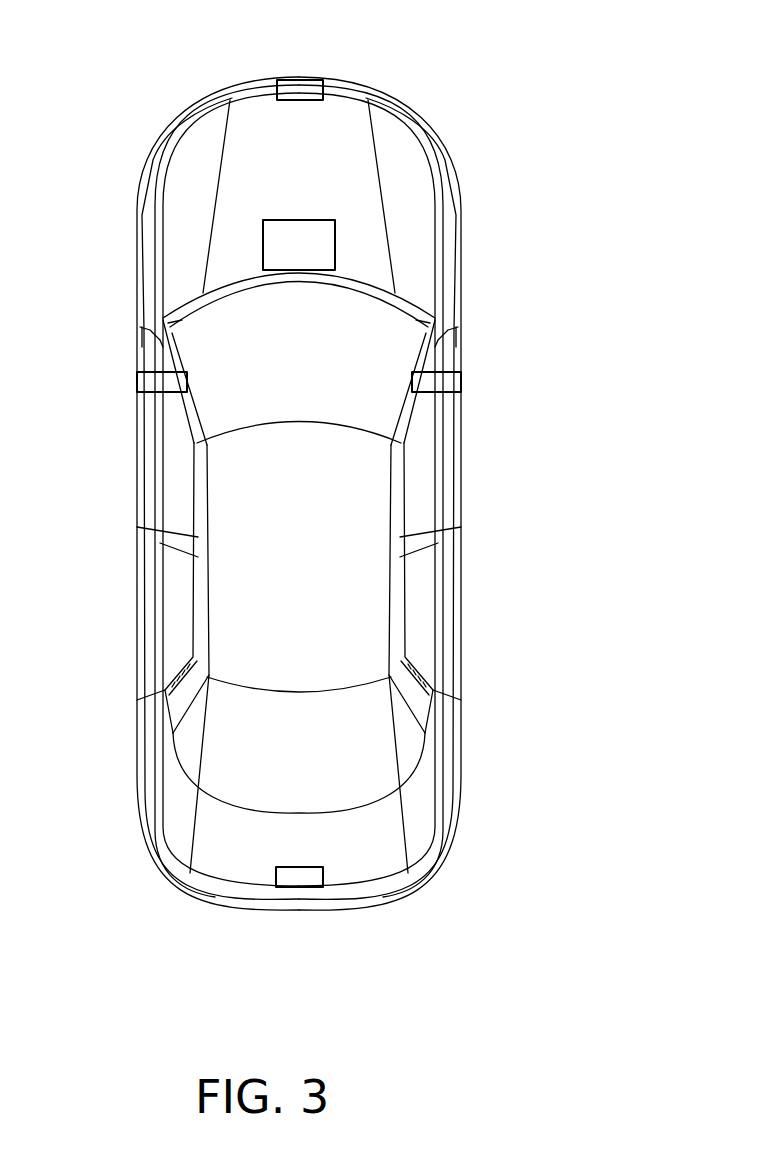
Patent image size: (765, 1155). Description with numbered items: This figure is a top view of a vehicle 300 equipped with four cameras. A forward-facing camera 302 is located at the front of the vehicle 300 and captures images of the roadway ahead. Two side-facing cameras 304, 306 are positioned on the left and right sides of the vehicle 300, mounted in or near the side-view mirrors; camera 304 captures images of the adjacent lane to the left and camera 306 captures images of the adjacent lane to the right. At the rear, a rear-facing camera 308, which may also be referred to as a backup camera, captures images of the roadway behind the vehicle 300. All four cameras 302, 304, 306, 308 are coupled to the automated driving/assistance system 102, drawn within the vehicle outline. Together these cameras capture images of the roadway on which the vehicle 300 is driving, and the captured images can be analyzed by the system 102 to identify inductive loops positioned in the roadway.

The vehicle 300 is at (355, 482).
The automated driving/assistance system 102 is at (299, 245).
The camera 302 is at (293, 87).
The camera 304 is at (148, 381).
The camera 306 is at (452, 381).
The camera 308 is at (300, 880).